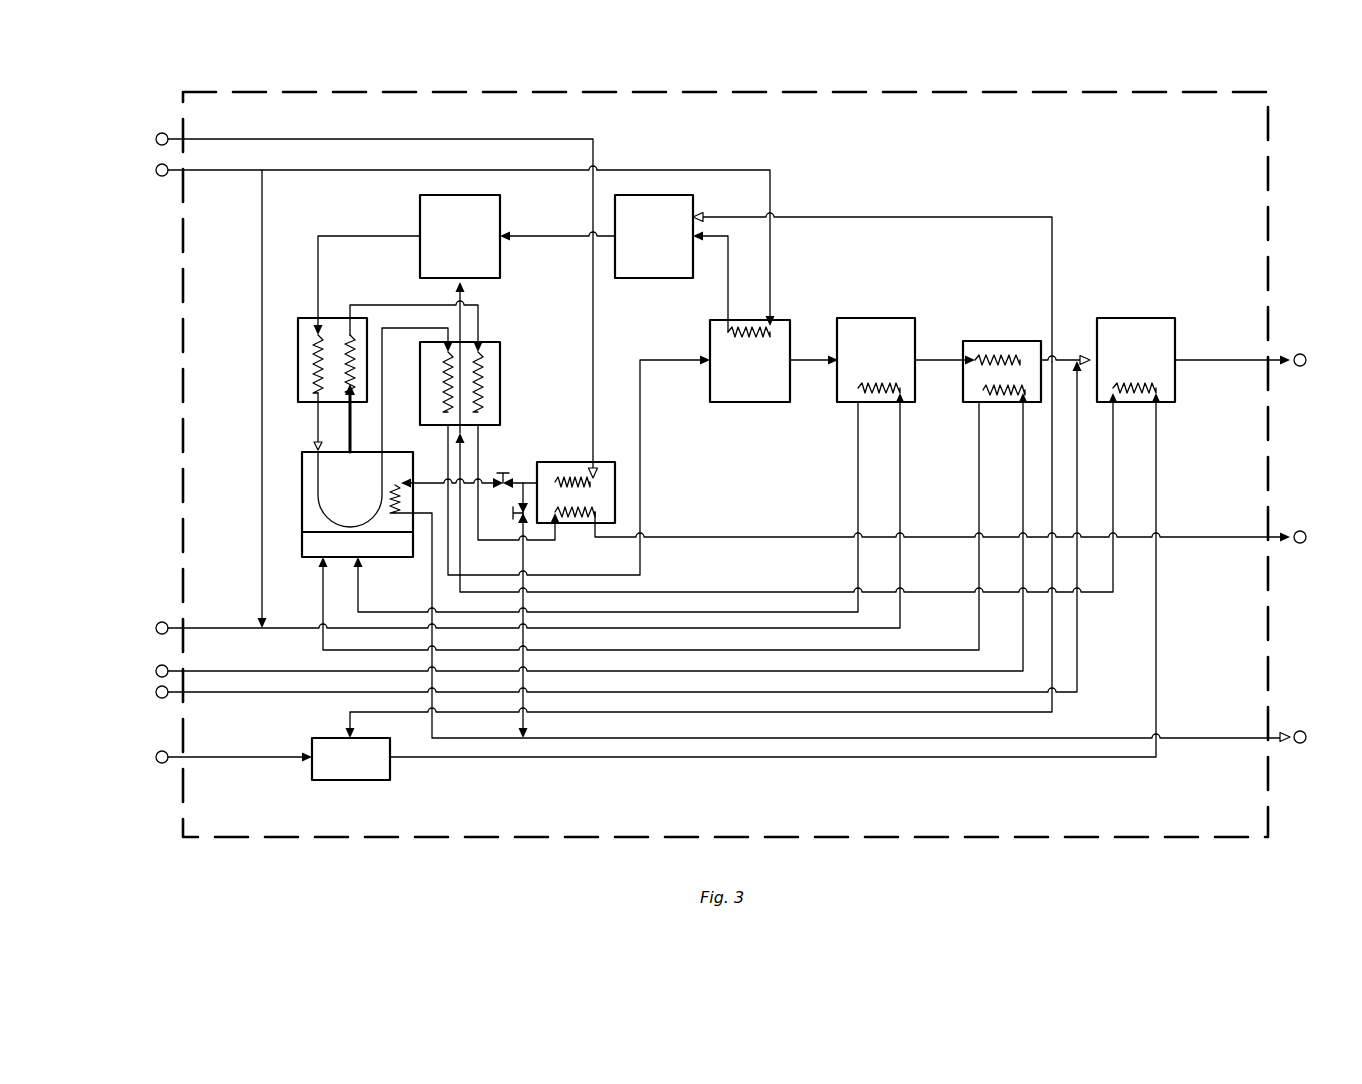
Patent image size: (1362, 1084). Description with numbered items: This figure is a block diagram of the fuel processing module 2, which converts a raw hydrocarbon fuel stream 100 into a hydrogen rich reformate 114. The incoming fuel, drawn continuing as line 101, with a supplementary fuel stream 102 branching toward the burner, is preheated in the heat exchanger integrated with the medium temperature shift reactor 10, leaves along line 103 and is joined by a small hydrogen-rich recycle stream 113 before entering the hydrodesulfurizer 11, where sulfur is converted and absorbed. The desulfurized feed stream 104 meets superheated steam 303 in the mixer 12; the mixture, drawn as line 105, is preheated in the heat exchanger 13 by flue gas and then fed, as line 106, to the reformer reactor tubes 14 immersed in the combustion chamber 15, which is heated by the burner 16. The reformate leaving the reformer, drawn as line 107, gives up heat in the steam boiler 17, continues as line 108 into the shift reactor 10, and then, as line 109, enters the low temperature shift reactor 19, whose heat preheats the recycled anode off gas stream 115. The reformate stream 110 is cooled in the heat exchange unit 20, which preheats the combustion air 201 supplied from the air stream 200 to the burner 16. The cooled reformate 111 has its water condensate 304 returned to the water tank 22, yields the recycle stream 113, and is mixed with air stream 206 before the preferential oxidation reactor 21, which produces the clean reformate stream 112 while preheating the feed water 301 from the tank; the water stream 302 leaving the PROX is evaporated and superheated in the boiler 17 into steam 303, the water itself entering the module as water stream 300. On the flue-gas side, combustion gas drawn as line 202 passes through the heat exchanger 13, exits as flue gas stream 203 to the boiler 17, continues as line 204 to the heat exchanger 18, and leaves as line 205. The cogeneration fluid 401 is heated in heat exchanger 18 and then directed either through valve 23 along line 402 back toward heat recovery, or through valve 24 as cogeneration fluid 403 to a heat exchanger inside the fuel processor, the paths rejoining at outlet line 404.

The fuel processing module 2 is at (743, 68).
The medium temperature shift reactor 10 is at (745, 404).
The hydrodesulfurizer 11 is at (687, 193).
The mixer 12 is at (418, 220).
The heat exchanger 13 is at (298, 333).
The reformer reactor tubes 14 is at (317, 470).
The combustion chamber 15 is at (302, 510).
The burner 16 is at (302, 543).
The steam boiler 17 is at (471, 383).
The heat exchanger 18 is at (615, 490).
The low temperature shift reactor 19 is at (878, 318).
The heat exchange unit 20 is at (980, 340).
The preferential oxidation reactor 21 is at (1155, 317).
The water tank 22 is at (371, 783).
The valve 23 is at (509, 514).
The valve 24 is at (508, 475).
The fuel stream 100 is at (347, 170).
The fuel line to MTS heat exchange 101 is at (686, 235).
The supplementary fuel stream 102 is at (237, 399).
The fuel line from MTS to HDS 103 is at (702, 282).
The desulfurized feed stream 104 is at (557, 229).
The mixed fuel line to heat exchanger 105 is at (367, 285).
The preheated fuel line to reformer 106 is at (297, 421).
The reformate line from reformer 107 is at (415, 390).
The reformate line to burner 108 is at (606, 507).
The reformate line MTS to LTS 109 is at (643, 466).
The reformate stream 110 is at (945, 370).
The reformate 111 is at (1065, 352).
The reformate stream 112 is at (1232, 352).
The hydrogen-rich recycle stream 113 is at (872, 276).
The hydrogen rich reformate 114 is at (1318, 360).
The anode off gas recycling stream 115 is at (501, 515).
The air stream 200 is at (563, 537).
The combustion air 201 is at (649, 526).
The burner exhaust line 202 is at (347, 433).
The flue gas stream 203 is at (416, 315).
The anode exhaust line to valve 204 is at (511, 458).
The exhaust outlet line 205 is at (910, 486).
The air stream 206 is at (590, 531).
The water stream 300 is at (205, 757).
The feed water 301 is at (775, 586).
The water stream 302 is at (787, 492).
The superheated steam 303 is at (477, 357).
The water condensate 304 is at (715, 550).
The cogeneration fluid 401 is at (350, 304).
The anode exhaust bypass line 402 is at (537, 610).
The cogeneration fluid 403 is at (447, 474).
The exhaust outlet line 404 is at (868, 630).